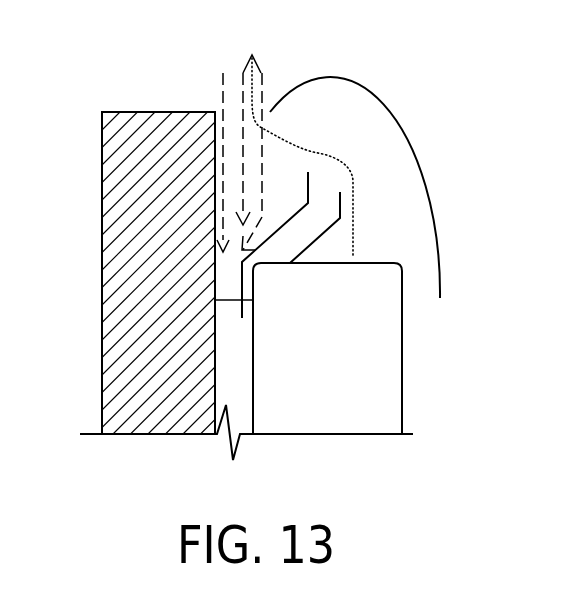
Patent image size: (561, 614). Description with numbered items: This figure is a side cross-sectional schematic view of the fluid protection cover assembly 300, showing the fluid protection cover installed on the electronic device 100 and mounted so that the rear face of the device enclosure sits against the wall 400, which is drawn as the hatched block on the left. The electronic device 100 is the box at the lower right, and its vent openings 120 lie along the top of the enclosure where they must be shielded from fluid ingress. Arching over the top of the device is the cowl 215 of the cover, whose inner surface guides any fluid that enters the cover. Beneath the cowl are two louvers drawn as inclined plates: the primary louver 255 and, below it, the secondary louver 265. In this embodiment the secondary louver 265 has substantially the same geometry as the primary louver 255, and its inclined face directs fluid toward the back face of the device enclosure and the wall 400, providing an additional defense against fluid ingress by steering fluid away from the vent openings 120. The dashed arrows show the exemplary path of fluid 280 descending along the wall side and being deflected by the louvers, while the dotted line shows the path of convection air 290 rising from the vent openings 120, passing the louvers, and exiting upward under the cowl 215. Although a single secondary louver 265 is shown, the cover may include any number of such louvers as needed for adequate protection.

The electronic device 100 is at (385, 370).
The vent openings 120 is at (356, 263).
The cowl 215 is at (397, 113).
The primary louver 255 is at (300, 208).
The secondary louver 265 is at (314, 242).
The fluid 280 is at (223, 92).
The convection air 290 is at (312, 150).
The fluid protection cover assembly 300 is at (260, 33).
The wall 400 is at (127, 262).